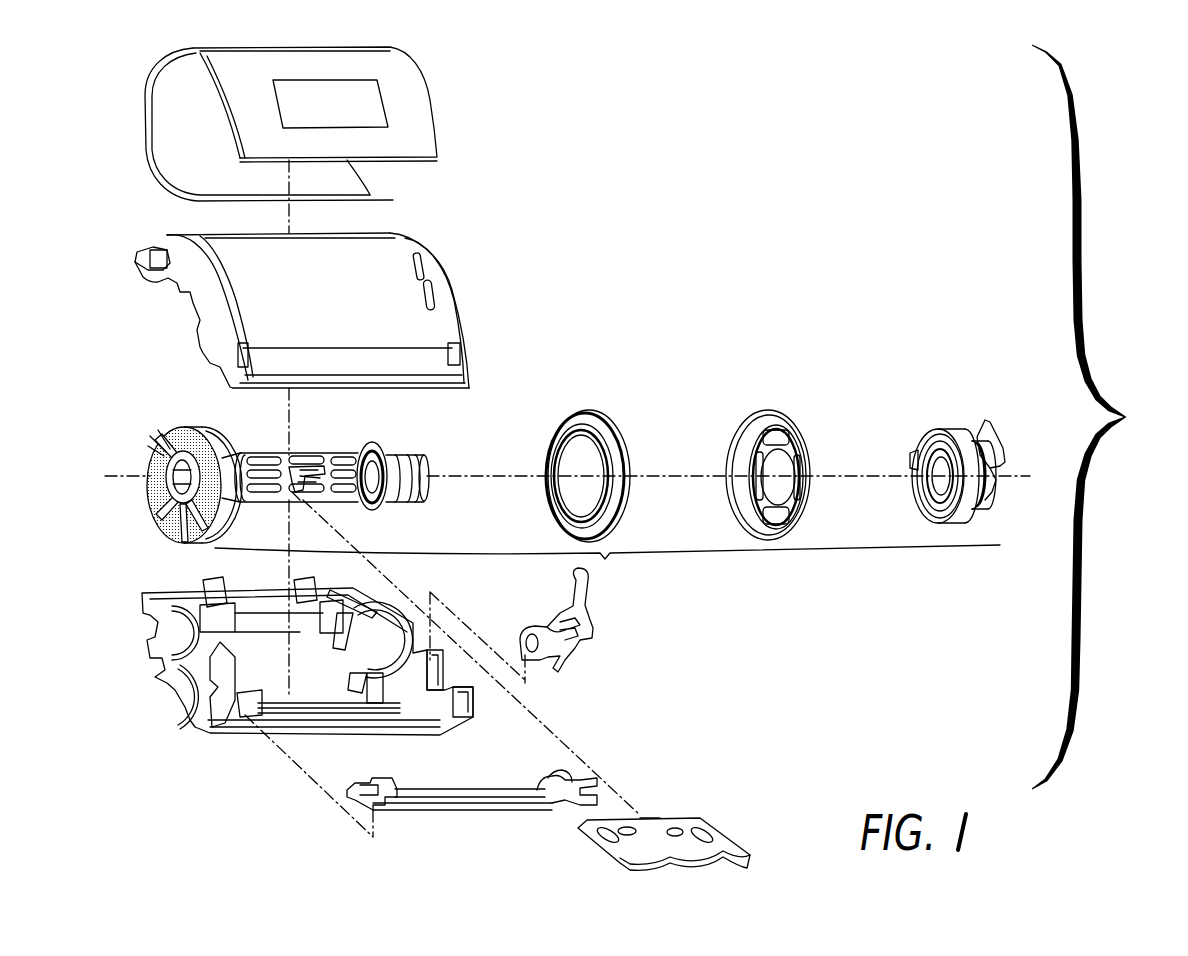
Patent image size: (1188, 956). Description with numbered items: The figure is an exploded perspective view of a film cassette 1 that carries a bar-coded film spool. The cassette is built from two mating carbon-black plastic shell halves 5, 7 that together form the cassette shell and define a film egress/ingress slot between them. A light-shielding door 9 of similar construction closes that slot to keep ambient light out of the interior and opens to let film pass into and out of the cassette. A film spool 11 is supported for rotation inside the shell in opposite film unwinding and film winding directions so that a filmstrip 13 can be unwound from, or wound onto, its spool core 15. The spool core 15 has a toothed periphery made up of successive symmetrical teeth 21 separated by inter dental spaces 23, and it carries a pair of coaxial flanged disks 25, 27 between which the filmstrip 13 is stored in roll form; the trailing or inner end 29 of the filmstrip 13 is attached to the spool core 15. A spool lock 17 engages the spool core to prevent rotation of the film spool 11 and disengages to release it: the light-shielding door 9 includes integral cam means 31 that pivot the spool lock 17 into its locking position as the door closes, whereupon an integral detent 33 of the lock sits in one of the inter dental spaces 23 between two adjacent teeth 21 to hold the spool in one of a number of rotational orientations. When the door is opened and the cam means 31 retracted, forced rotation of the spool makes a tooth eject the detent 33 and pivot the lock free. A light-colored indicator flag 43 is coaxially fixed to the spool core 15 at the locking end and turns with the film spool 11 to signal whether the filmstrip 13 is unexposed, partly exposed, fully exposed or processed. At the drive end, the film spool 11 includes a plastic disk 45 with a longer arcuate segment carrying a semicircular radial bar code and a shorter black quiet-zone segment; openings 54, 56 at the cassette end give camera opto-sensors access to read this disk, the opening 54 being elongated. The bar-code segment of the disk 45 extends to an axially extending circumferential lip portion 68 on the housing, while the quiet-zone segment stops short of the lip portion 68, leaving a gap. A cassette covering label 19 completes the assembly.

The film cassette 1 is at (1098, 417).
The shell half 5 is at (457, 280).
The shell half 7 is at (172, 692).
The light-shielding door 9 is at (450, 812).
The film spool 11 is at (607, 567).
The filmstrip 13 is at (727, 847).
The spool core 15 is at (367, 438).
The spool lock 17 is at (593, 630).
The cassette covering label 19 is at (420, 70).
The teeth 21 is at (972, 438).
The inter dental spaces 23 is at (993, 422).
The flanged disk 25 is at (758, 410).
The flanged disk 27 is at (588, 410).
The trailing or inner end 29 is at (650, 817).
The cam means 31 is at (570, 773).
The detent 33 is at (553, 622).
The indicator flag 43 is at (1007, 457).
The plastic disk 45 is at (151, 442).
The opening 54 is at (183, 697).
The opening 56 is at (143, 275).
The lip portion 68 is at (185, 713).